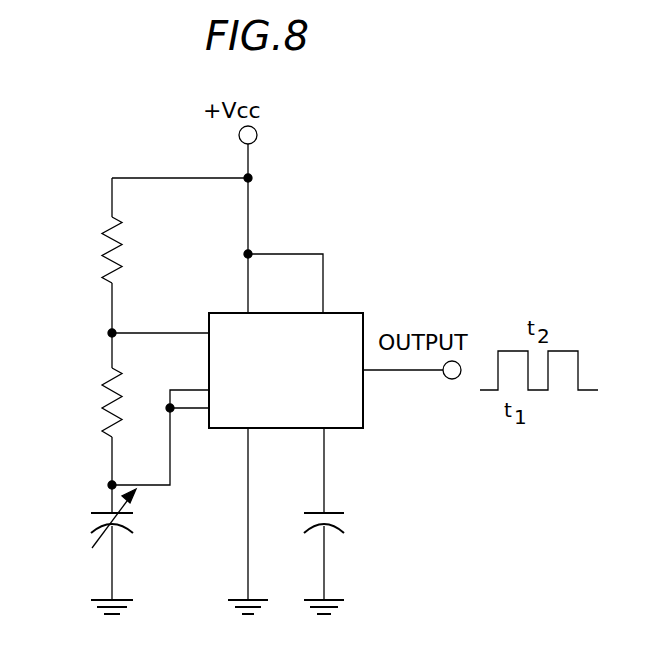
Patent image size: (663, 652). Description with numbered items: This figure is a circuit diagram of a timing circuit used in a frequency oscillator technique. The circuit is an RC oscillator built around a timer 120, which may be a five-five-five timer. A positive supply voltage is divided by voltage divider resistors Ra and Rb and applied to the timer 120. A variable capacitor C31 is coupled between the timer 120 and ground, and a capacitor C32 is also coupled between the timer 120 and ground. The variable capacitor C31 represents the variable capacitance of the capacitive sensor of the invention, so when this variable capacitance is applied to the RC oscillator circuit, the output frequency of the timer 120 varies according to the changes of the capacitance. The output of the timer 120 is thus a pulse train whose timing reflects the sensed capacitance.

The timer 120 is at (343, 313).
The voltage divider resistor Ra is at (89, 255).
The voltage divider resistor Rb is at (92, 409).
The variable capacitor C31 is at (88, 549).
The capacitor C32 is at (352, 521).